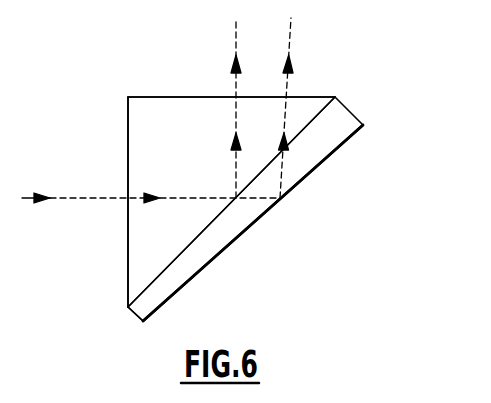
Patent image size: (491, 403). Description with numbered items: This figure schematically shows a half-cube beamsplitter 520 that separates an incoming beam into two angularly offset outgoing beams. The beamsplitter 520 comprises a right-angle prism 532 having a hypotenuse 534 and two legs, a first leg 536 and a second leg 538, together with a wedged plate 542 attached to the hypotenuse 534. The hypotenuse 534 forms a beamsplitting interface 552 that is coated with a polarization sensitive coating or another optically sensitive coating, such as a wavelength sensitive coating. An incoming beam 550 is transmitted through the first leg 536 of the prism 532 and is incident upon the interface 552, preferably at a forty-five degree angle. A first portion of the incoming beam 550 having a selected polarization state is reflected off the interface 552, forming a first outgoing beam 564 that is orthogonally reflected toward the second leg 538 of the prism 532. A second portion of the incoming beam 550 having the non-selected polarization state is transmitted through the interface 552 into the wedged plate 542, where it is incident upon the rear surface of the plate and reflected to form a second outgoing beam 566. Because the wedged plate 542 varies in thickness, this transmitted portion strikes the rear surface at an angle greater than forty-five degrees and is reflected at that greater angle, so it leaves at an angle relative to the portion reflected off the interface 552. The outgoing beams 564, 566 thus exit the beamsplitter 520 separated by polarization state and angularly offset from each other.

The beamsplitter 520 is at (262, 228).
The right-angle prism 532 is at (118, 135).
The hypotenuse 534 is at (168, 276).
The first leg 536 is at (128, 281).
The second leg 538 is at (306, 97).
The wedged plate 542 is at (309, 139).
The incoming beam 550 is at (62, 200).
The beamsplitting interface 552 is at (317, 117).
The first outgoing beam 564 is at (236, 33).
The second outgoing beam 566 is at (290, 34).